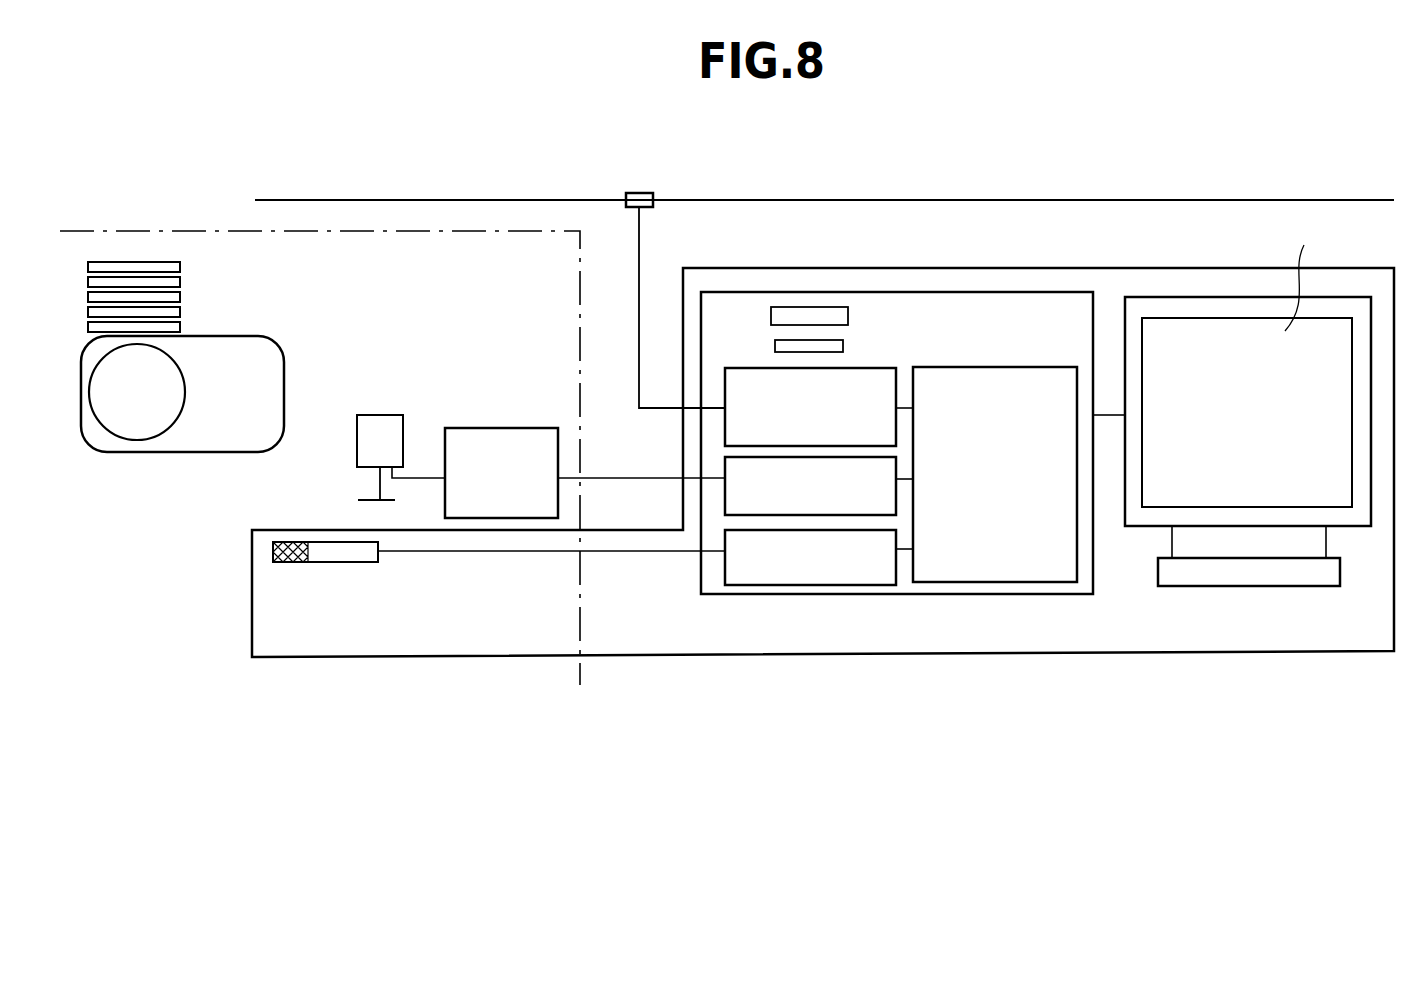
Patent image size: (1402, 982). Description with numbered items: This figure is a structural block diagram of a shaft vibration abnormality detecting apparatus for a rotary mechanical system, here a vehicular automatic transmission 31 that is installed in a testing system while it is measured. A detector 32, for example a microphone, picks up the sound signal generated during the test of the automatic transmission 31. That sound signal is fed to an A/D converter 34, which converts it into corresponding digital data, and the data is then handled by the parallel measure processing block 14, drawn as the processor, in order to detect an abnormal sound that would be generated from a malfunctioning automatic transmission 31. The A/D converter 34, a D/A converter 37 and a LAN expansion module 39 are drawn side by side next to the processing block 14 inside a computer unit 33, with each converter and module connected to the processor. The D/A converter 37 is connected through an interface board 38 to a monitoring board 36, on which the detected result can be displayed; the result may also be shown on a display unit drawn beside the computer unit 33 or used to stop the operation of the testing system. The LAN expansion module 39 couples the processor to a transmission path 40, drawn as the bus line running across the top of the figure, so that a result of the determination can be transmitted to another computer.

The parallel measure processing block 14 is at (1003, 367).
The automatic transmission 31 is at (253, 342).
The detector 32 is at (293, 562).
The computer unit 33 is at (800, 596).
The A/D converter 34 is at (725, 575).
The monitoring board 36 is at (383, 415).
The D/A converter 37 is at (725, 470).
The interface board 38 is at (497, 428).
The LAN expansion module 39 is at (877, 368).
The transmission path 40 is at (741, 199).